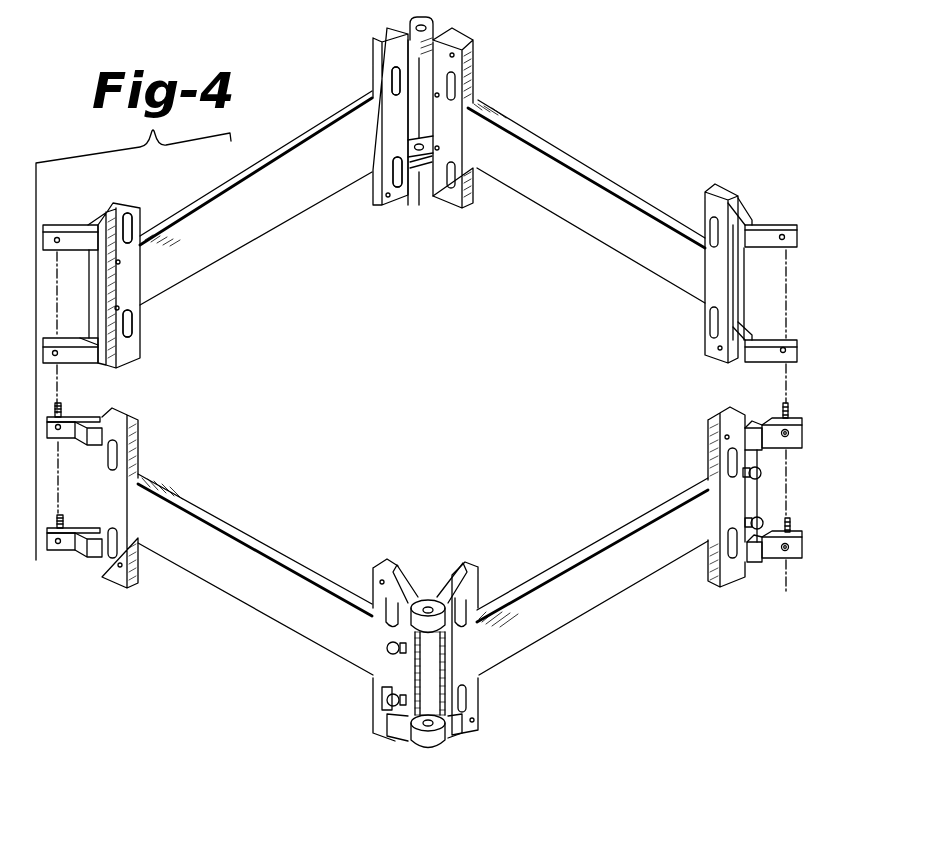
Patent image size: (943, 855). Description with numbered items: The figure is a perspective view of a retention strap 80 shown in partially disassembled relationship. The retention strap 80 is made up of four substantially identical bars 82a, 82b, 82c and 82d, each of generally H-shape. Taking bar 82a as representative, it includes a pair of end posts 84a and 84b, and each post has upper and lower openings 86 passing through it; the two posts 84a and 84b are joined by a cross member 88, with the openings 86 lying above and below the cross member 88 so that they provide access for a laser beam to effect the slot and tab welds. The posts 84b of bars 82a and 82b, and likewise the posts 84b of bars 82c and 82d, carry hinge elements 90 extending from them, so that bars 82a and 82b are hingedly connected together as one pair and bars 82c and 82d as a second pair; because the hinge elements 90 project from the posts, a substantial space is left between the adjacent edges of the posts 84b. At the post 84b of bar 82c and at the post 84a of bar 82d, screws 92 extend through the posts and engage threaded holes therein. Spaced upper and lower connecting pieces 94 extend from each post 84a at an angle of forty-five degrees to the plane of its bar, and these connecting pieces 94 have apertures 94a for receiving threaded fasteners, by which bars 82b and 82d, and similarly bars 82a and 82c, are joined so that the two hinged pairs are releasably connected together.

The retention strap 80 is at (630, 150).
The bar 82a is at (331, 216).
The bar 82b is at (622, 267).
The bar 82c is at (302, 506).
The bar 82d is at (626, 502).
The end post 84a is at (135, 206).
The end post 84b is at (376, 67).
The opening 86 is at (137, 222).
The cross member 88 is at (247, 237).
The hinge element 90 is at (470, 610).
The screw 92 is at (748, 478).
The connecting piece 94 is at (70, 340).
The aperture 94a is at (58, 237).